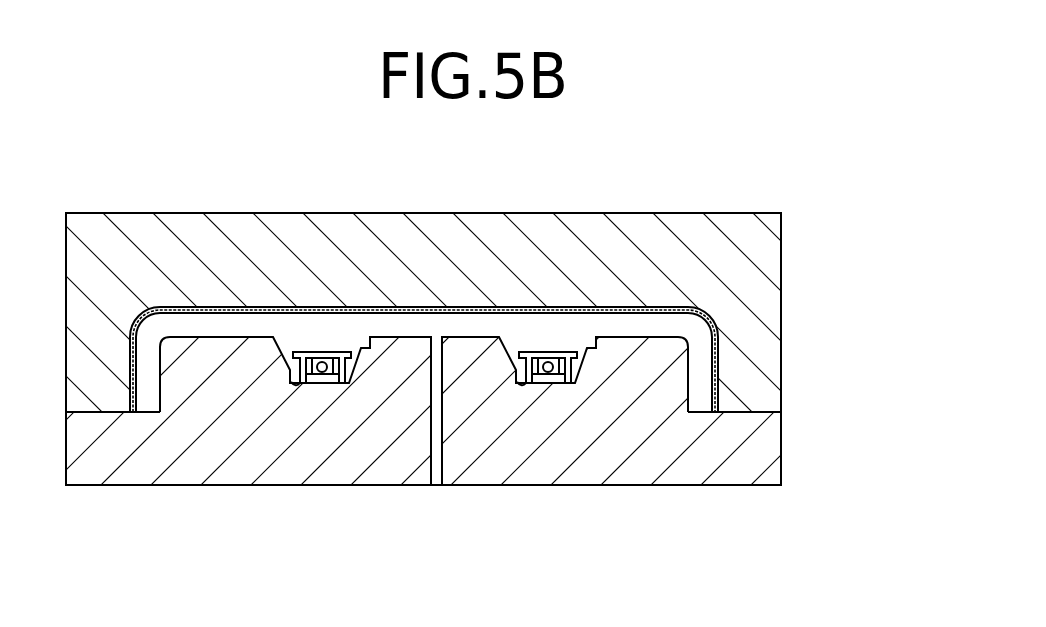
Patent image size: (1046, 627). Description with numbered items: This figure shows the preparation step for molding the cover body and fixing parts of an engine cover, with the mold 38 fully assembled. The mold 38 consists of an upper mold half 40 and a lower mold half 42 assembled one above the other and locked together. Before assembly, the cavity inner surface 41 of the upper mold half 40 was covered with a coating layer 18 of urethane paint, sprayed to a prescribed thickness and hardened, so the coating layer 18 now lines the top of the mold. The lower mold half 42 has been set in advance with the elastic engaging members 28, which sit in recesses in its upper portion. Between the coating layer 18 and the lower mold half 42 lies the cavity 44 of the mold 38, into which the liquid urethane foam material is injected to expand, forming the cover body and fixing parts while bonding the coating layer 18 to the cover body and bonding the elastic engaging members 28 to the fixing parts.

The coating layer 18 is at (489, 287).
The elastic engaging member 28 is at (294, 368).
The mold 38 is at (476, 349).
The upper mold half 40 is at (738, 378).
The cavity inner surface 41 is at (596, 311).
The lower mold half 42 is at (748, 450).
The cavity 44 is at (228, 328).